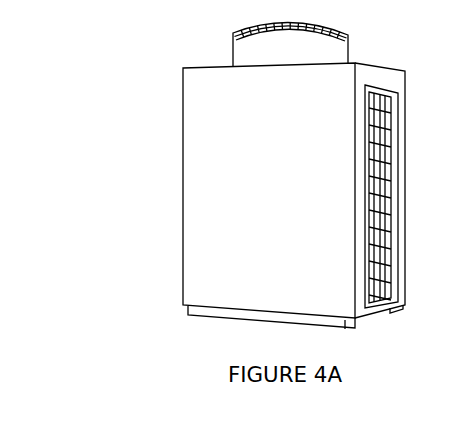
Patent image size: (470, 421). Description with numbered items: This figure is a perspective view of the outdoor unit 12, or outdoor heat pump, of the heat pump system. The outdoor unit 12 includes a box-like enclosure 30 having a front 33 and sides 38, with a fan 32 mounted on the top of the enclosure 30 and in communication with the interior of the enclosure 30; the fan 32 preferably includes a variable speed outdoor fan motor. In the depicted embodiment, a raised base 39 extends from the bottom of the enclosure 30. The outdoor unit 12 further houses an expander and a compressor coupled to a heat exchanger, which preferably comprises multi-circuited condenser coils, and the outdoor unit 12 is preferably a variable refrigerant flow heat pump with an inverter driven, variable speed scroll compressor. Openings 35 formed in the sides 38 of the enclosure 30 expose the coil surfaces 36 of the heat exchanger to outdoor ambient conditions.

The outdoor unit 12 is at (157, 57).
The enclosure 30 is at (182, 100).
The fan 32 is at (235, 28).
The front 33 is at (202, 142).
The openings 35 is at (395, 125).
The coil surfaces 36 is at (387, 177).
The sides 38 is at (393, 82).
The raised base 39 is at (215, 320).